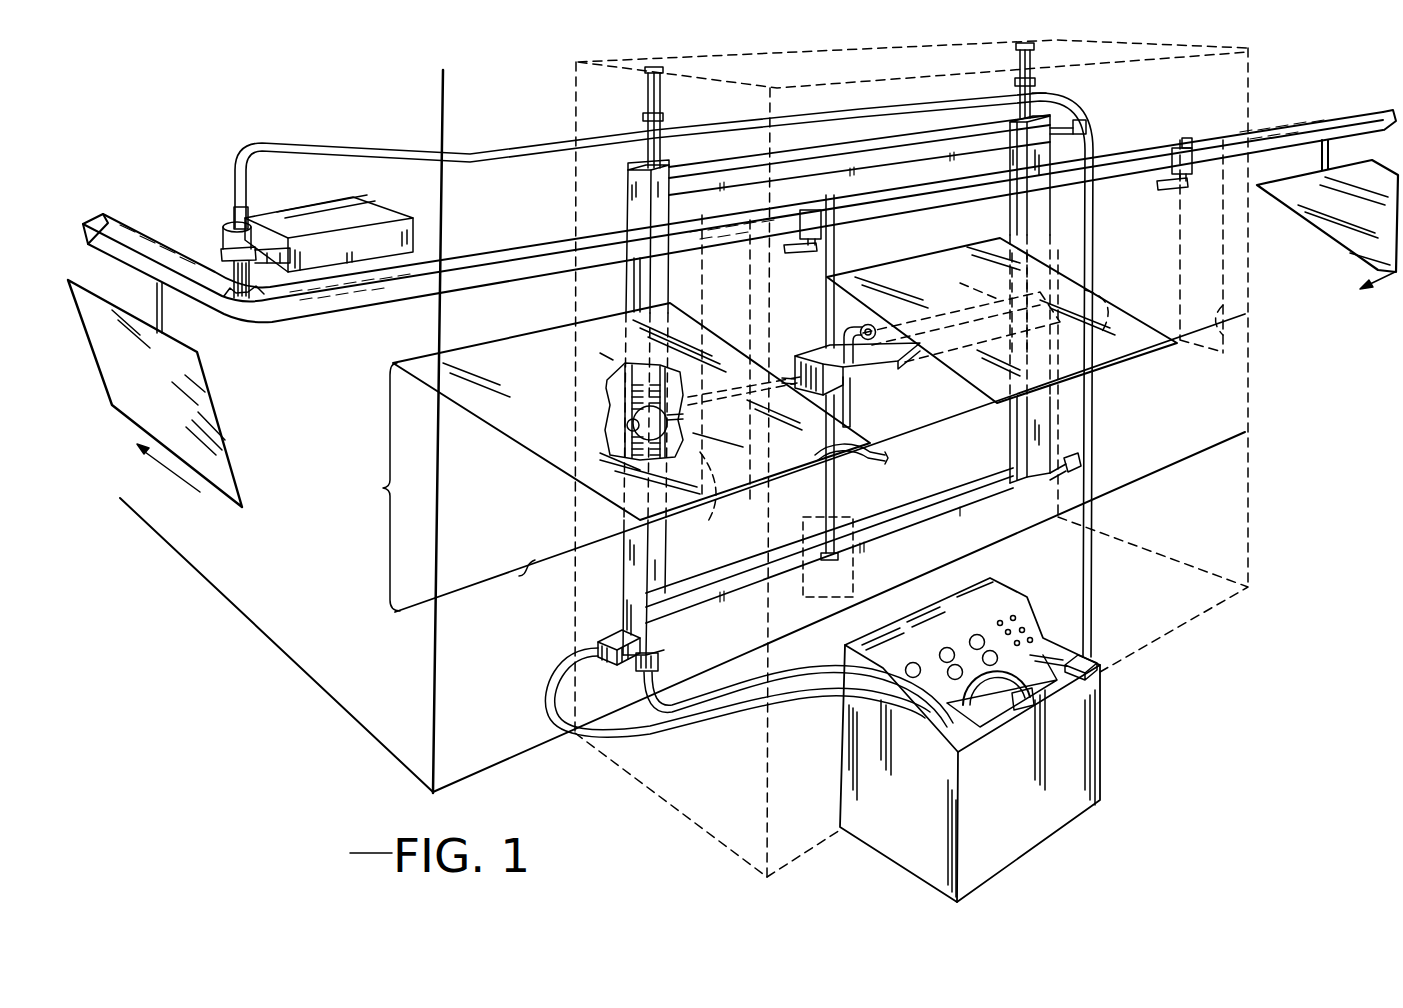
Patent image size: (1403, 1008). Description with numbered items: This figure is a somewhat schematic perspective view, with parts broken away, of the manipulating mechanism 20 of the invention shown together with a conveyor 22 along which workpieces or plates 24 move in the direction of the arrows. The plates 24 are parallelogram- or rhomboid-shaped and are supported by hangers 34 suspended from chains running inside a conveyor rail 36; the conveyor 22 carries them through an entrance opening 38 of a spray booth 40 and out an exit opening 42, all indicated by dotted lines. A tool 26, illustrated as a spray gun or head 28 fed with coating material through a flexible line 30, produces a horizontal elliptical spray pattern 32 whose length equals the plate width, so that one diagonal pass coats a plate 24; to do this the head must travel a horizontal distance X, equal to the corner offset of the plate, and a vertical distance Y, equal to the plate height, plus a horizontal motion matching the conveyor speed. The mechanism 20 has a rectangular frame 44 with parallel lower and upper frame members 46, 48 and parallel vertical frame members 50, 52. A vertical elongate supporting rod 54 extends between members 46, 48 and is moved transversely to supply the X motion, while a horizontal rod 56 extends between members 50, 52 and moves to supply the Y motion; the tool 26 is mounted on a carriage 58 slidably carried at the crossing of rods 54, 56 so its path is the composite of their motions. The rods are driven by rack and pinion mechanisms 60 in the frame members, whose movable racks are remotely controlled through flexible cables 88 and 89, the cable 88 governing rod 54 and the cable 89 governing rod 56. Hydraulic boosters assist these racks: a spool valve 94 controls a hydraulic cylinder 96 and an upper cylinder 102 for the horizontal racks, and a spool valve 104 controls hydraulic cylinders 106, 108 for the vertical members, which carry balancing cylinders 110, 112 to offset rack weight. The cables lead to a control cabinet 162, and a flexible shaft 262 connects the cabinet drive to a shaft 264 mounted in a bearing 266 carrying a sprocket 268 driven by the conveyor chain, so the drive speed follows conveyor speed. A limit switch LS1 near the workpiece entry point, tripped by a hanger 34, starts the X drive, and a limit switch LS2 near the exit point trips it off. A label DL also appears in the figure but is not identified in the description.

The manipulating mechanism 20 is at (571, 637).
The conveyor 22 is at (1258, 108).
The workpieces or plates 24 is at (206, 408).
The tool 26 is at (852, 328).
The spray gun or head 28 is at (872, 328).
The flexible line 30 is at (852, 397).
The elliptical spray pattern 32 is at (1094, 372).
The hangers 34 is at (633, 290).
The conveyor rail 36 is at (545, 250).
The entrance opening 38 is at (1245, 330).
The spray booth 40 is at (1252, 472).
The exit opening 42 is at (715, 382).
The rectangular frame 44 is at (624, 577).
The lower frame member 46 is at (953, 513).
The upper frame member 48 is at (857, 140).
The vertical frame member 50 is at (1035, 228).
The vertical frame member 52 is at (859, 368).
The vertically-disposed elongate supporting member or rod 54 is at (834, 480).
The horizontally disposed elongate supporting member or rod 56 is at (893, 358).
The carriage or mounting means 58 is at (826, 345).
The rack and pinion mechanism 60 is at (626, 429).
The flexible cable 88 is at (550, 714).
The flexible cable 89 is at (660, 722).
The spool valve 94 is at (628, 661).
The hydraulic cylinder 96 is at (1060, 480).
The upper cylinder 102 is at (1067, 140).
The spool valve 104 is at (658, 661).
The hydraulic cylinder 106 is at (645, 153).
The hydraulic cylinder 108 is at (1037, 92).
The balancing cylinder 110 is at (646, 94).
The balancing cylinder 112 is at (1018, 52).
The control cabinet 162 is at (1102, 687).
The flexible shaft or cable 262 is at (402, 155).
The shaft 264 is at (234, 212).
The bearing 266 is at (222, 236).
The sprocket 268 is at (213, 296).
The limit switch LS1 is at (1170, 188).
The limit switch LS2 is at (801, 213).
The dead length DL is at (848, 572).
The horizontal distance X is at (528, 581).
The vertical distance Y is at (379, 487).